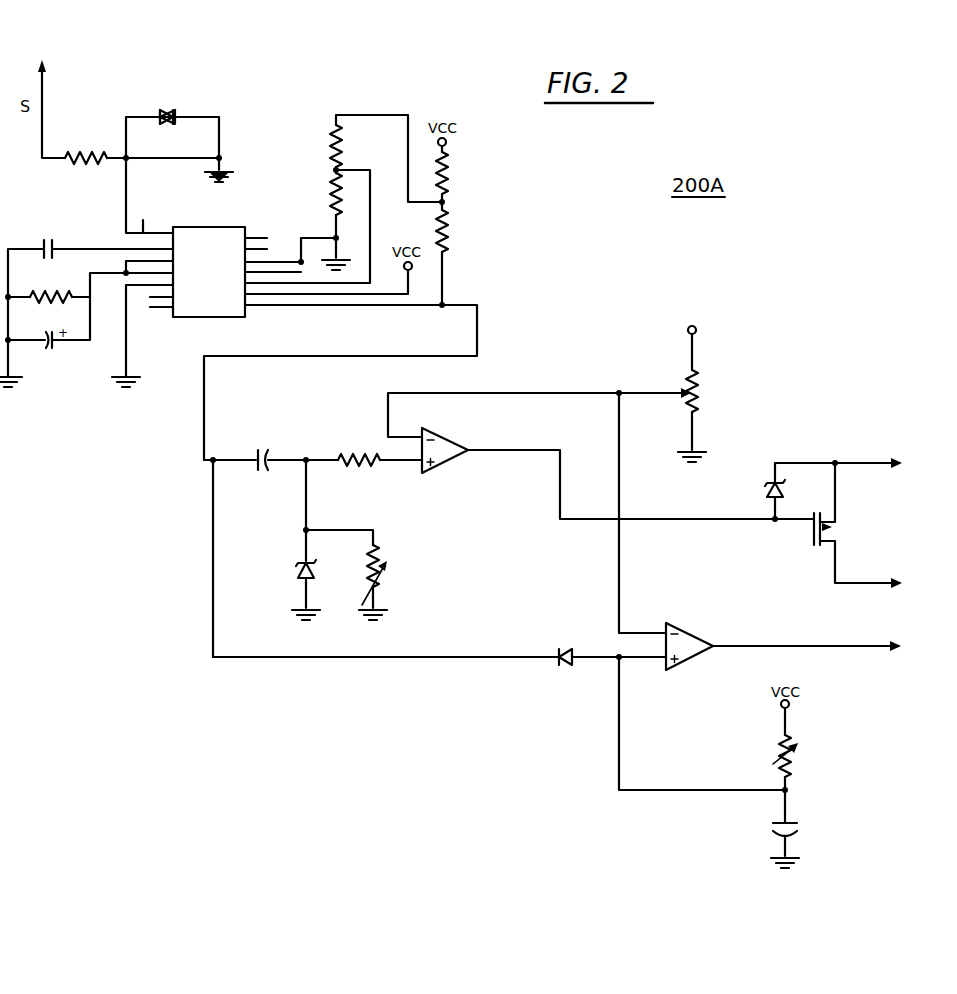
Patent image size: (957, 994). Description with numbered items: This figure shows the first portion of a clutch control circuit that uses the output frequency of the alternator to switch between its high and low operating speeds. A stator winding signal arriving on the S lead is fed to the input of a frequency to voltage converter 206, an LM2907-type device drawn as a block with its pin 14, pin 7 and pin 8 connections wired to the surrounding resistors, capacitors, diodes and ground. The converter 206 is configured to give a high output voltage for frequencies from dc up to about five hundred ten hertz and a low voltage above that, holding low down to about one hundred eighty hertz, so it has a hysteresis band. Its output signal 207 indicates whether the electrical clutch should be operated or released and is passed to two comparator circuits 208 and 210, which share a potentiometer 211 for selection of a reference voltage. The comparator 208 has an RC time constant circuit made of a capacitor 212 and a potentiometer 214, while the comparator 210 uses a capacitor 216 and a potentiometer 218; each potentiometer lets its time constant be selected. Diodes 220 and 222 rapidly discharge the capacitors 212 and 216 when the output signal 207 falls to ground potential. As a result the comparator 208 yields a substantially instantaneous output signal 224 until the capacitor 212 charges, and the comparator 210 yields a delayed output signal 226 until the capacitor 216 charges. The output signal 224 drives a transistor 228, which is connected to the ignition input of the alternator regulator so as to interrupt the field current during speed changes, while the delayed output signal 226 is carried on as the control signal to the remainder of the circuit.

The frequency to voltage converter 206 is at (232, 227).
The output signal 207 is at (477, 331).
The comparator circuit 208 is at (452, 442).
The comparator circuit 210 is at (670, 623).
The potentiometer 211 is at (700, 370).
The capacitor 212 is at (262, 440).
The potentiometer 214 is at (390, 566).
The capacitor 216 is at (805, 826).
The potentiometer 218 is at (795, 758).
The diode 220 is at (296, 575).
The diode 222 is at (565, 673).
The output signal 224 is at (530, 452).
The output signal 226 is at (731, 648).
The transistor 228 is at (838, 526).
The converter pin 7 is at (154, 312).
The converter pin 8 is at (262, 316).
The converter pin 14 is at (267, 233).